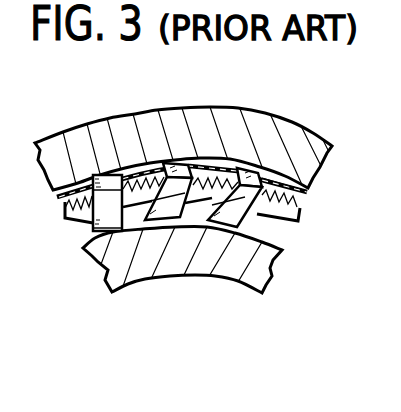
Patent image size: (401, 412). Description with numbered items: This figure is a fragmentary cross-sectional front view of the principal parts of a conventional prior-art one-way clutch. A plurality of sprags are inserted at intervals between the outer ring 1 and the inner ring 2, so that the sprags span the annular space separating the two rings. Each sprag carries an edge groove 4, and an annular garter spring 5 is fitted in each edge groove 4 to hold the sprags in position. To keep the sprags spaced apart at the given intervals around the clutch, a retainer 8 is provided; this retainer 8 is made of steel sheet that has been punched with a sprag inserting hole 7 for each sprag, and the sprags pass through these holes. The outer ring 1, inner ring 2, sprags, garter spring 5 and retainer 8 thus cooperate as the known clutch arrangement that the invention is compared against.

The outer ring 1 is at (221, 119).
The inner ring 2 is at (158, 274).
The edge groove 4 is at (95, 233).
The annular garter spring 5 is at (283, 222).
The sprag inserting hole 7 is at (263, 168).
The retainer 8 is at (303, 195).